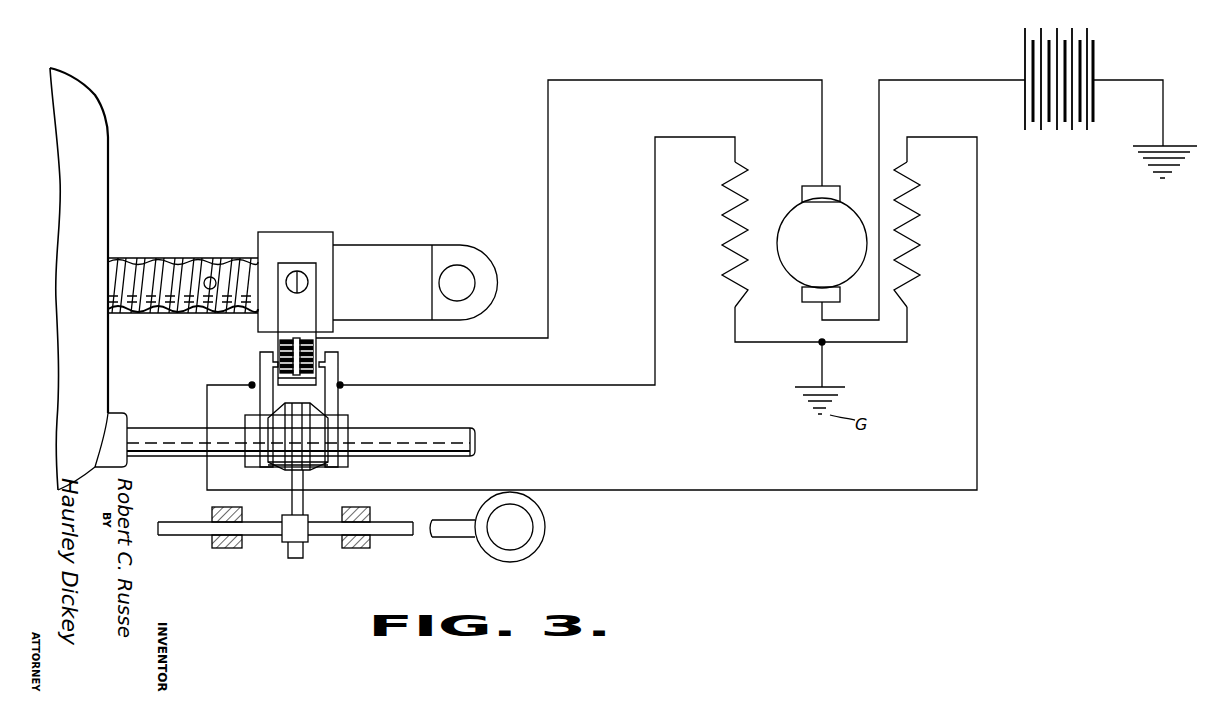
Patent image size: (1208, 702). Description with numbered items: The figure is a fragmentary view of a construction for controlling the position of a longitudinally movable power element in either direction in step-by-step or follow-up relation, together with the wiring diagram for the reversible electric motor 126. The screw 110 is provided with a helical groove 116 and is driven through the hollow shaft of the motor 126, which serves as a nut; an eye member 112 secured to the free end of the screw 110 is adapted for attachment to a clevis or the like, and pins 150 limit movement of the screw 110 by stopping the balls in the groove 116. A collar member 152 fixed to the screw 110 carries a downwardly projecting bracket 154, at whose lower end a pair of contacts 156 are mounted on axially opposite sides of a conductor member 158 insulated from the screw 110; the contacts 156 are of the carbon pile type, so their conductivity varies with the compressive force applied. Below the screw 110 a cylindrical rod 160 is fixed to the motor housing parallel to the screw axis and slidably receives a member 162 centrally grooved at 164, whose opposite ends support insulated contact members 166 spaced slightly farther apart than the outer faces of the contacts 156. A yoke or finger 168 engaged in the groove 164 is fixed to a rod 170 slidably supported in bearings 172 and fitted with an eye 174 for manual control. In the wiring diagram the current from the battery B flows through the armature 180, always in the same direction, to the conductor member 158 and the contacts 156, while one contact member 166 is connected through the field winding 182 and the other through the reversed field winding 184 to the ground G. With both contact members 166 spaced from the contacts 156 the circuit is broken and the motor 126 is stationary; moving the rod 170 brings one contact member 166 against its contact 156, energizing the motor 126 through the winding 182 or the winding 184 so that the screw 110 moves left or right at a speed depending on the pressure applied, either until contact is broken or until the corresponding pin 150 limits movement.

The screw 110 is at (186, 257).
The eye member 112 is at (367, 252).
The helical groove 116 is at (137, 260).
The electric motor 126 is at (110, 137).
The pins 150 is at (208, 278).
The collar member 152 is at (293, 238).
The bracket 154 is at (308, 308).
The contacts 156 is at (295, 340).
The conductor member 158 is at (305, 374).
The cylindrical rod 160 is at (450, 430).
The member 162 is at (330, 472).
The groove 164 is at (298, 430).
The contact members 166 is at (268, 366).
The yoke or finger 168 is at (292, 507).
The rod 170 is at (264, 530).
The bearings 172 is at (212, 508).
The eye 174 is at (546, 522).
The armature 180 is at (843, 250).
The field winding 182 is at (729, 247).
The field winding 184 is at (913, 247).
The battery B is at (1075, 130).
The ground G is at (1155, 170).